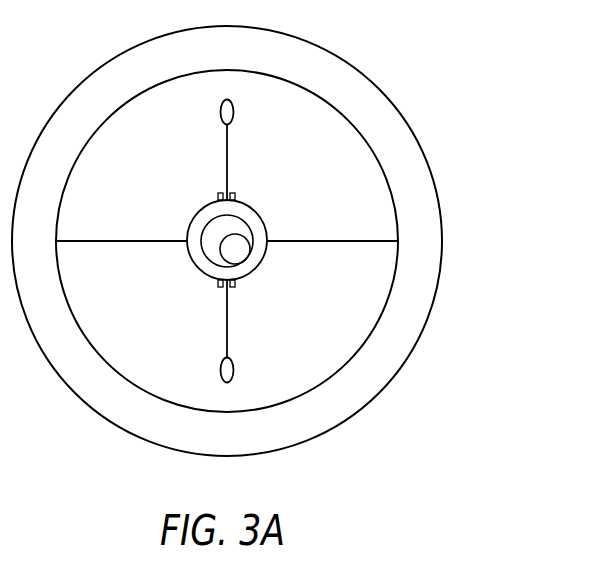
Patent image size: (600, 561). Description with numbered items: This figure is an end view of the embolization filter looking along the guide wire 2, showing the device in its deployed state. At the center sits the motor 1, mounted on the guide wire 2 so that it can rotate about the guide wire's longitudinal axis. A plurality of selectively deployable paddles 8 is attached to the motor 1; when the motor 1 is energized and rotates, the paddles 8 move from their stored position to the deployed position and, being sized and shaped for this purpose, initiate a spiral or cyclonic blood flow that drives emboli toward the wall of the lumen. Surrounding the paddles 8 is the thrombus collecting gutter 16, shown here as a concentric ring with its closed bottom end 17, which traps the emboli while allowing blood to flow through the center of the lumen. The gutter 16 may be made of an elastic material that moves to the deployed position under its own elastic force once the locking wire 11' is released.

The motor 1 is at (248, 203).
The guide wire 2 is at (236, 248).
The paddles 8 is at (233, 105).
The locking wire 11' is at (227, 241).
The thrombus collecting gutter 16 is at (412, 125).
The closed bottom end 17 is at (412, 210).